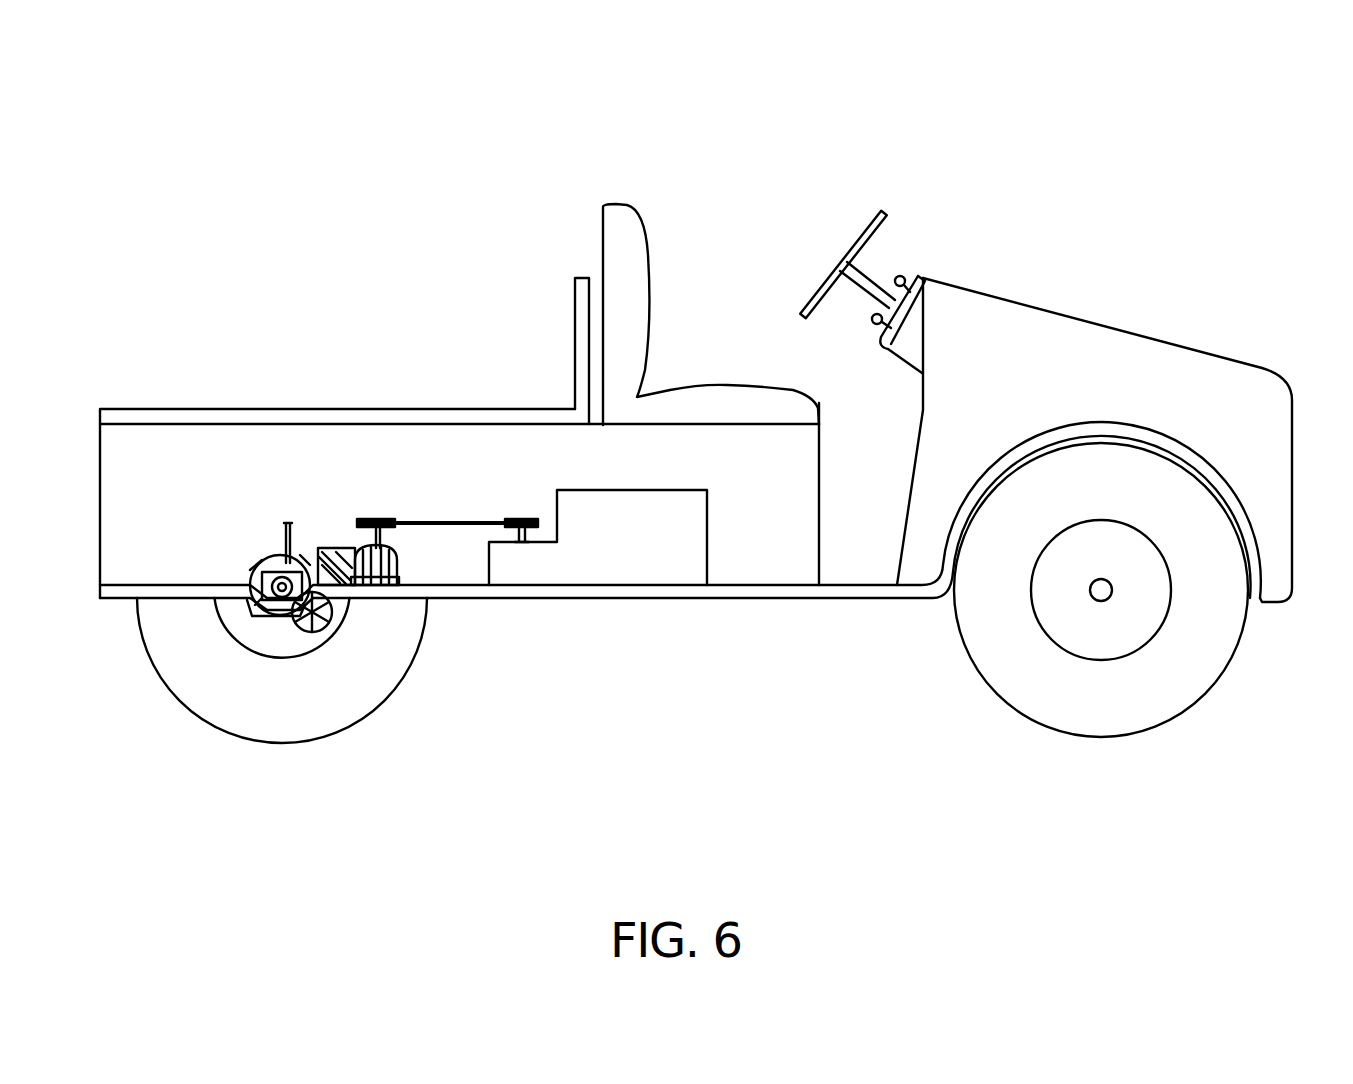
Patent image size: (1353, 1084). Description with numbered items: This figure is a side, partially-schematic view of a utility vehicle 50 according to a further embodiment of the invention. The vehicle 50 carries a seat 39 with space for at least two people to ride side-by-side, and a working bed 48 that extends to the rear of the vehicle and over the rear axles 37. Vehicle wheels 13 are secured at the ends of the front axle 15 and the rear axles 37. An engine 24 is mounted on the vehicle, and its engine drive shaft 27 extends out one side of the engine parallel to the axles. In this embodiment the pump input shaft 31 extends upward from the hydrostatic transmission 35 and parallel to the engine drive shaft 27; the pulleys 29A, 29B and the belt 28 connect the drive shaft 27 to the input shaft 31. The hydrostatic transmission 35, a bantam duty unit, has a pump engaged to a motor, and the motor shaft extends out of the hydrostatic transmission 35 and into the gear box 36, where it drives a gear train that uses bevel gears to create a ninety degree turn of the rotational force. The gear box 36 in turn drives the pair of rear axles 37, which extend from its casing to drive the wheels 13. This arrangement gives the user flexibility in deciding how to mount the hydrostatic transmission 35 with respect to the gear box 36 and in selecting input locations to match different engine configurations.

The vehicle 50 is at (1150, 172).
The working bed 48 is at (245, 409).
The seat 39 is at (652, 308).
The engine 24 is at (653, 555).
The belt 28 is at (463, 519).
The pulley 29A is at (362, 519).
The pulley 29B is at (532, 519).
The engine drive shaft 27 is at (528, 535).
The pump input shaft 31 is at (367, 530).
The hydrostatic transmission 35 is at (400, 573).
The gear box 36 is at (270, 553).
The rear axles 37 is at (260, 600).
The vehicle wheels 13 is at (281, 736).
The front axle 15 is at (1113, 590).